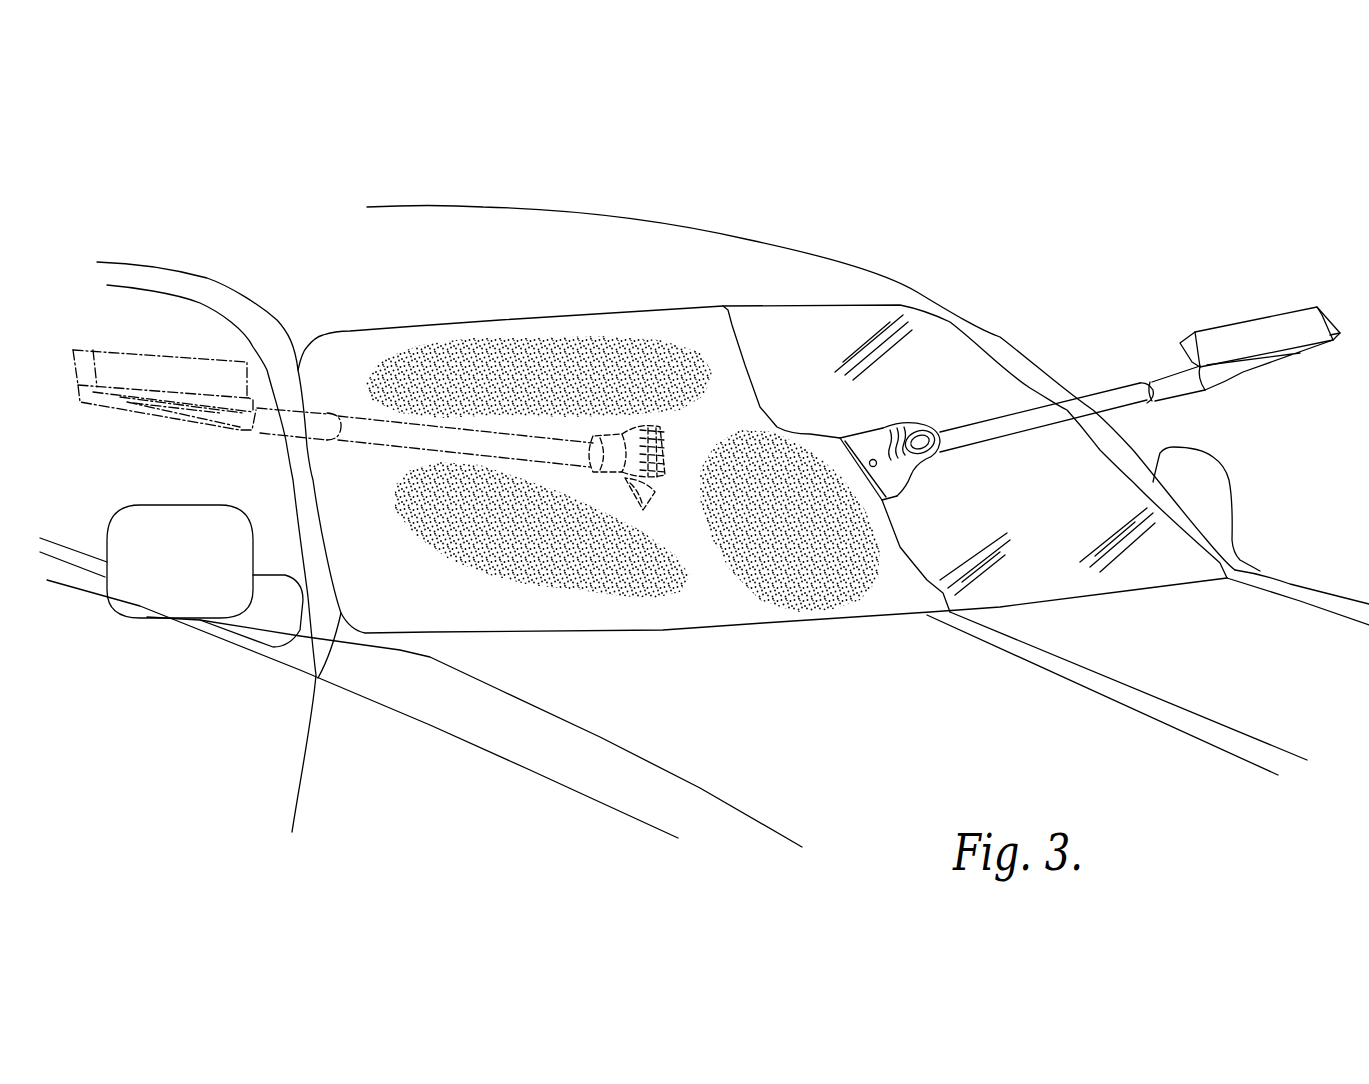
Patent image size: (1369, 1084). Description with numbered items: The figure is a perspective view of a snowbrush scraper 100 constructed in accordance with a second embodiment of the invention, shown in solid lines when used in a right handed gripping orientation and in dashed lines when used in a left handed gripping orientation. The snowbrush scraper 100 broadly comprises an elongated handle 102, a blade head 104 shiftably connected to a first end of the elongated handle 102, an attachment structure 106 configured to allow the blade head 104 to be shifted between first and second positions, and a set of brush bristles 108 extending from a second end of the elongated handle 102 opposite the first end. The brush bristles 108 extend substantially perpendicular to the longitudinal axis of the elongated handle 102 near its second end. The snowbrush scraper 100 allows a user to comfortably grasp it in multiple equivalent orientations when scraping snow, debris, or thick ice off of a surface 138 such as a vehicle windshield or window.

The snowbrush scraper 100 is at (706, 364).
The elongated handle 102 is at (1120, 410).
The blade head 104 is at (937, 480).
The attachment structure 106 is at (937, 418).
The brush bristles 108 is at (1290, 298).
The surface 138 is at (807, 350).